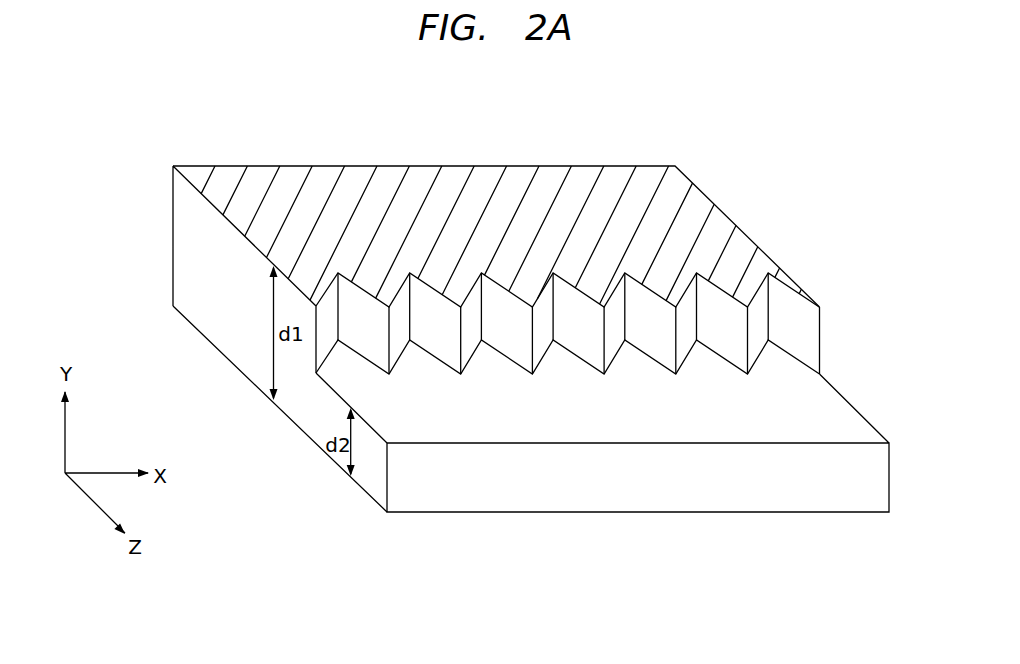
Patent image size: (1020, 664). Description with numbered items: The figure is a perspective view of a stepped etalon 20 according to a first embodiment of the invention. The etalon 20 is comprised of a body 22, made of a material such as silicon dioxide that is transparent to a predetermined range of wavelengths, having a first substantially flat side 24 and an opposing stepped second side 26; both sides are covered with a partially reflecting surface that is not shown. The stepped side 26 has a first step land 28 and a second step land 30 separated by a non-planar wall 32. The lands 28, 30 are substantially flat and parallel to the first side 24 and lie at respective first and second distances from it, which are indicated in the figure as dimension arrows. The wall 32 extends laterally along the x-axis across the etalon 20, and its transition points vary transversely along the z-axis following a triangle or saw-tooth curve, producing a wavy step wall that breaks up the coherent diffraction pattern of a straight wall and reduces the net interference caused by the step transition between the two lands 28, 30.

The stepped etalon 20 is at (818, 185).
The body 22 is at (188, 249).
The first substantially flat side 24 is at (290, 428).
The stepped second side 26 is at (302, 158).
The first step land 28 is at (545, 192).
The second step land 30 is at (837, 420).
The non-planar wall 32 is at (578, 323).